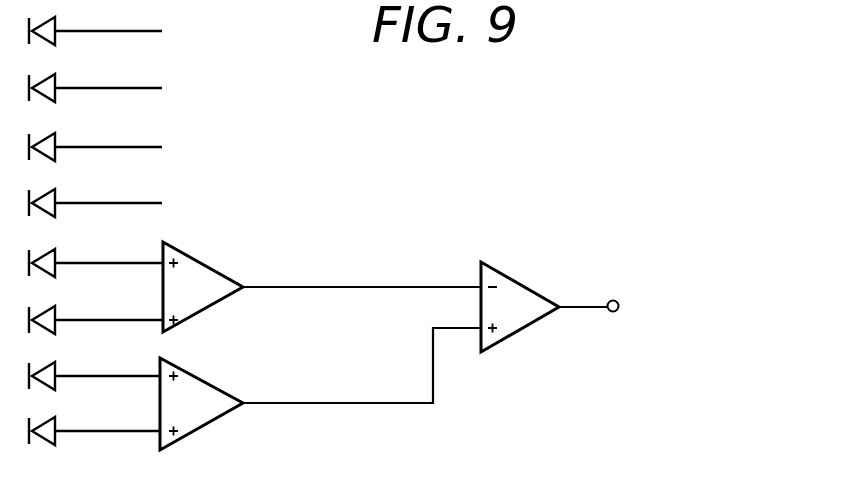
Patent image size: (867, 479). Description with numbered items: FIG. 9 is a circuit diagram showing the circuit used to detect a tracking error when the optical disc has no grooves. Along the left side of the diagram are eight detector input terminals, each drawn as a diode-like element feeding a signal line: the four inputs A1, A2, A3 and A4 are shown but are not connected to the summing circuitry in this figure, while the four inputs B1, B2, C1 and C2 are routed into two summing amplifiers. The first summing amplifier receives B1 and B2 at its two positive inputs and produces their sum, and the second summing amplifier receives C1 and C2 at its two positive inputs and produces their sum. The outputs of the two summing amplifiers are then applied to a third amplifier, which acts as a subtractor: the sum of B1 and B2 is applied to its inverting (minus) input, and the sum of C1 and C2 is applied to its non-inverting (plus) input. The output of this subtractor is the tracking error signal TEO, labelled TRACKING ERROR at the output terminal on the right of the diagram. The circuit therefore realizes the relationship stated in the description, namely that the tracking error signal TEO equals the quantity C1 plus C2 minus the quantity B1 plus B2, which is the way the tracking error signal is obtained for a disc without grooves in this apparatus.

The photodetector A1 is at (95, 24).
The photodetector A2 is at (95, 81).
The photodetector A3 is at (95, 140).
The photodetector A4 is at (95, 196).
The detector output B1 is at (96, 256).
The detector output B2 is at (96, 313).
The detector output C1 is at (94, 369).
The detector output C2 is at (94, 424).
The tracking error signal TEO is at (673, 306).